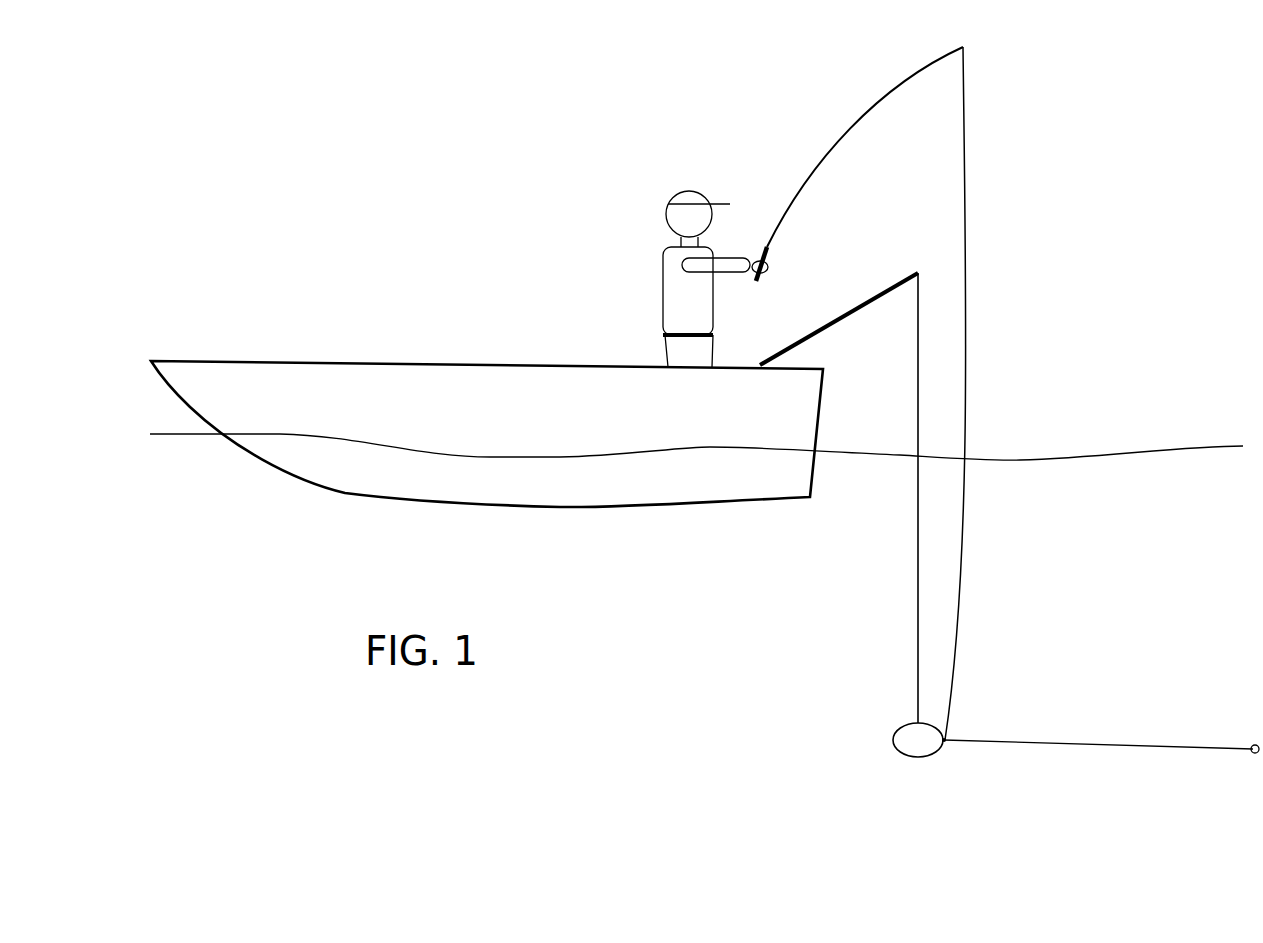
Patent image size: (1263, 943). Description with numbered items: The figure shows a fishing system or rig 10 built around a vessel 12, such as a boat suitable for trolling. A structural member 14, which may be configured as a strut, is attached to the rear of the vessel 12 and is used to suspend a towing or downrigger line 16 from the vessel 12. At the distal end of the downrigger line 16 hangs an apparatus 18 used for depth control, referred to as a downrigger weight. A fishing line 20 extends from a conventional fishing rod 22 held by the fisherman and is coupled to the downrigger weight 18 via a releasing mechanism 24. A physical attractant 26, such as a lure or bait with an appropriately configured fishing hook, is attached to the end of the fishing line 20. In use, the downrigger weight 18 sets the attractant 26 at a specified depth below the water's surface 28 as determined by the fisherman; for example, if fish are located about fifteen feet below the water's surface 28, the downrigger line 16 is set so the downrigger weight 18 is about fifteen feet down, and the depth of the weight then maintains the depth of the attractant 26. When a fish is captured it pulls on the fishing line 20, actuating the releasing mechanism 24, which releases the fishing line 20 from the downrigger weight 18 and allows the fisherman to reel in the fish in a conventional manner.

The system or rig 10 is at (503, 172).
The vessel 12 is at (388, 362).
The structural member 14 is at (876, 298).
The downrigger line 16 is at (918, 390).
The downrigger weight 18 is at (895, 733).
The fishing line 20 is at (963, 403).
The fishing rod 22 is at (860, 110).
The releasing mechanism 24 is at (946, 742).
The physical attractant 26 is at (1256, 755).
The water's surface 28 is at (1025, 455).